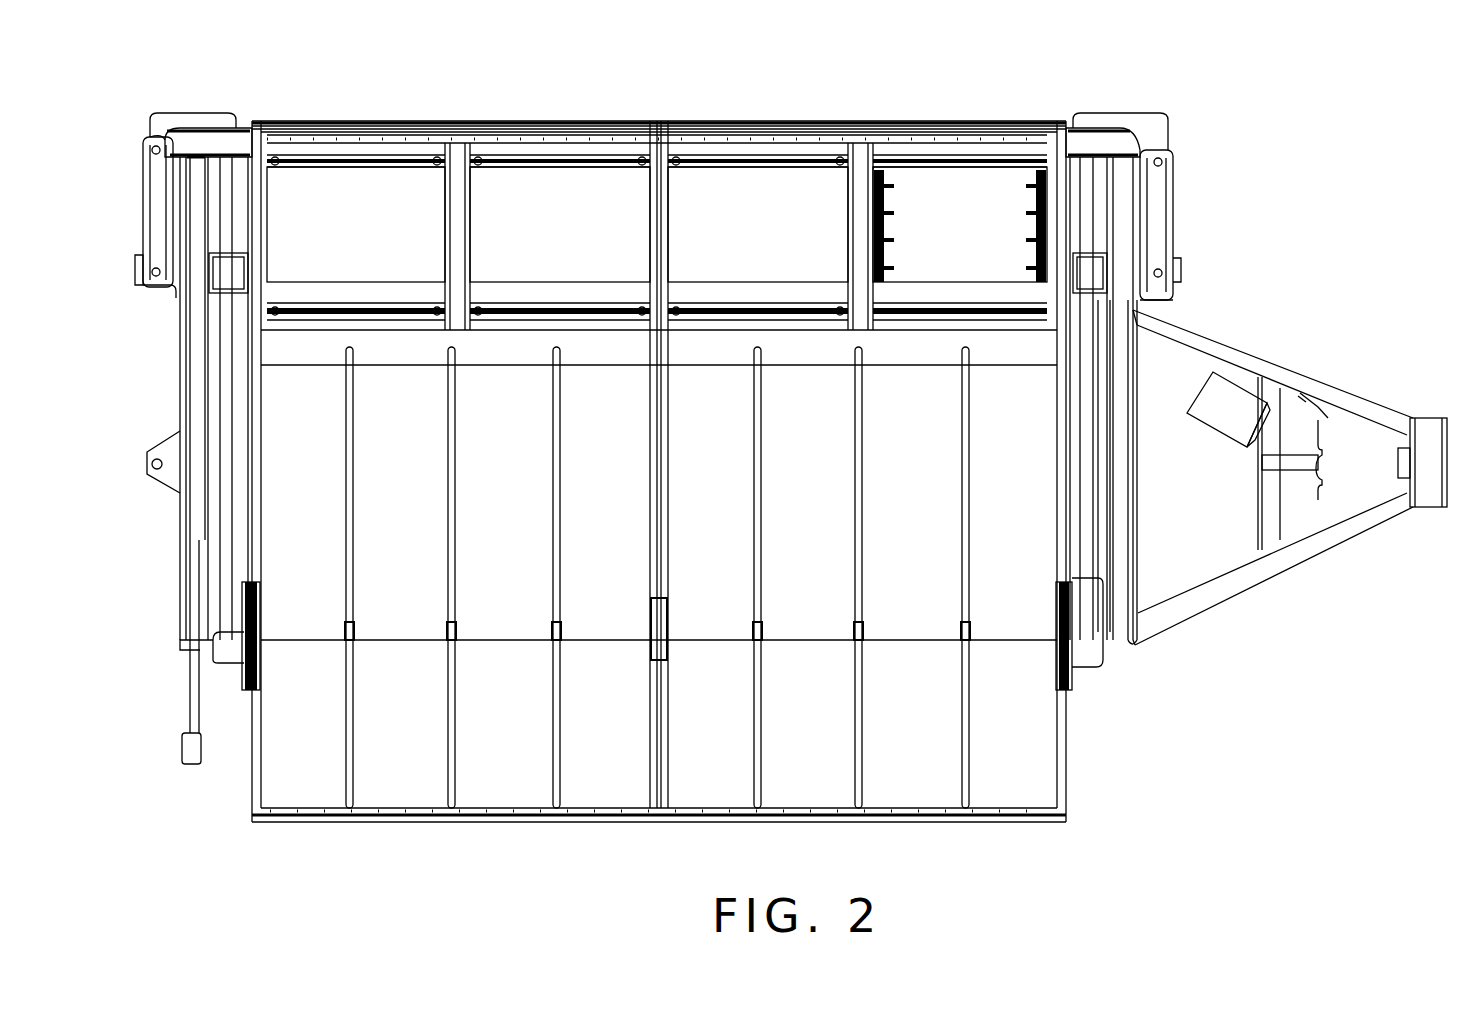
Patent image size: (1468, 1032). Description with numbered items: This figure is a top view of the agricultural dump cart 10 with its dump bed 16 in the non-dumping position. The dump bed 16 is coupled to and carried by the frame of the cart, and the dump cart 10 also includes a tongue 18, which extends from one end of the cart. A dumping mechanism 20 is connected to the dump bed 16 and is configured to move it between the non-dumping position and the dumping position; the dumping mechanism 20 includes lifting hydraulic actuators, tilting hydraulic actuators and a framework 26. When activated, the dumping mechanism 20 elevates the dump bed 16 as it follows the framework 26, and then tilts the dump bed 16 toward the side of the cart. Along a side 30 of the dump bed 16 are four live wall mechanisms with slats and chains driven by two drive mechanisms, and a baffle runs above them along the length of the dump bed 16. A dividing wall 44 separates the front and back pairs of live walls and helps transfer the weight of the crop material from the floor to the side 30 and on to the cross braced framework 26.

The agricultural dump cart 10 is at (1246, 90).
The dump bed 16 is at (1125, 767).
The tongue 18 is at (1290, 570).
The dumping mechanism 20 is at (1248, 244).
The framework 26 is at (1072, 128).
The side 30 is at (745, 104).
The dividing wall 44 is at (668, 540).